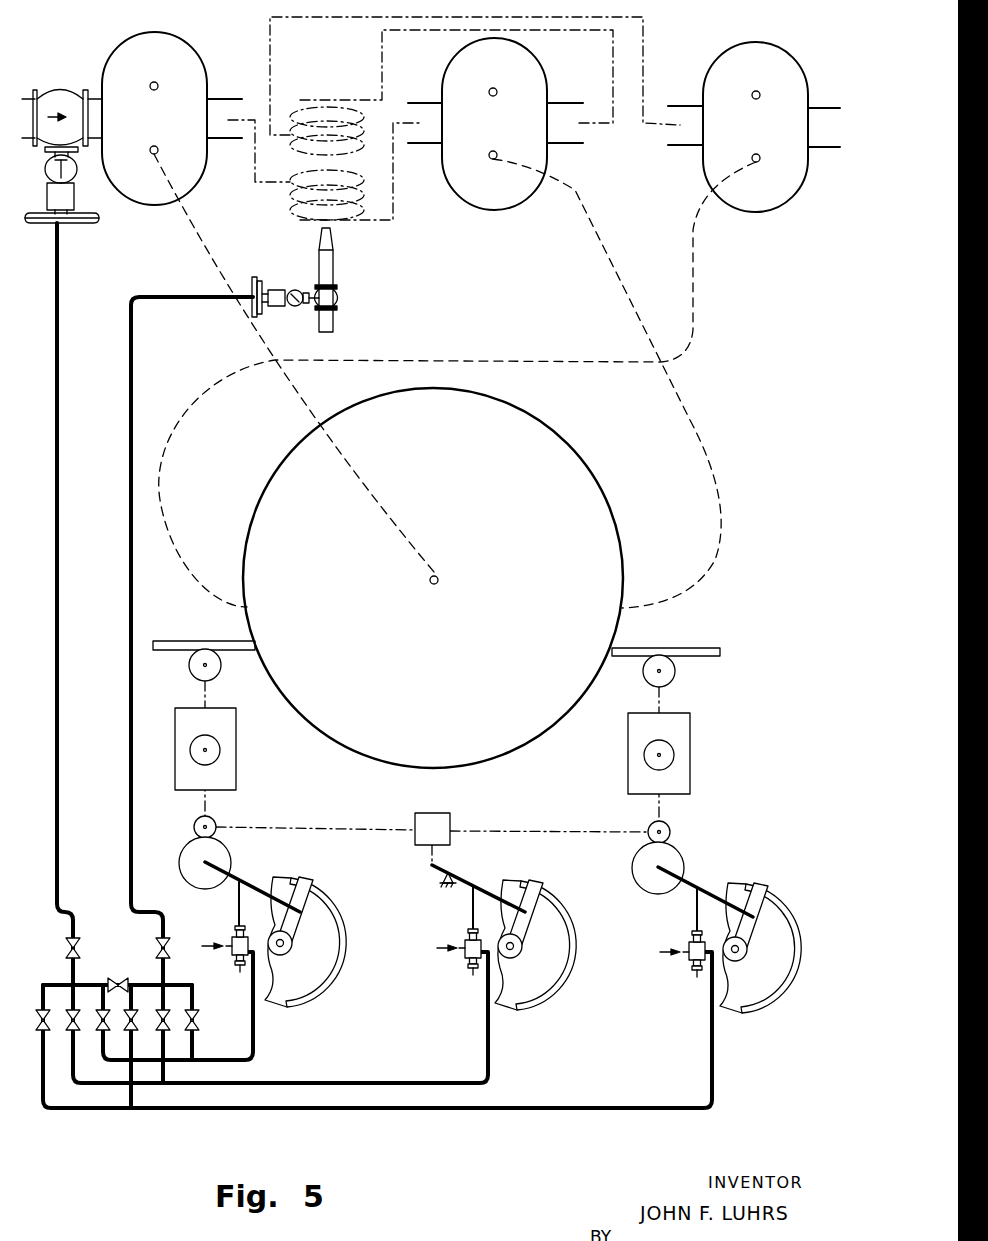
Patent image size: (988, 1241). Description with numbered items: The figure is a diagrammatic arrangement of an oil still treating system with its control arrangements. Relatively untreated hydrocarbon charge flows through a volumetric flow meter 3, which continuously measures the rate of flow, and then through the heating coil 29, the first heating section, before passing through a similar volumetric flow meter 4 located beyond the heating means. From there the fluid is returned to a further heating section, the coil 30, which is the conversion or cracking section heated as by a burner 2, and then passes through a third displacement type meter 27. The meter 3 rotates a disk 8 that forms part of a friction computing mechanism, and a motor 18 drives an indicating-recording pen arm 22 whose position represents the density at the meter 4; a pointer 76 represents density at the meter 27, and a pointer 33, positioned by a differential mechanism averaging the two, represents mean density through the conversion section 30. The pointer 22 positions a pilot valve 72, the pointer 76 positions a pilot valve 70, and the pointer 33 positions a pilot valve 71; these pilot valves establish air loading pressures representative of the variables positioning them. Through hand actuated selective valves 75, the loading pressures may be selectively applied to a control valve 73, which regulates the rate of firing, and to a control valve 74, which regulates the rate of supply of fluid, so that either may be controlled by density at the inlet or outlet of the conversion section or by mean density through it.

The burner 2 is at (333, 253).
The volumetric flow meter 3 is at (203, 172).
The volumetric flow meter 4 is at (543, 172).
The disk 8 is at (588, 456).
The motor 18 is at (690, 750).
The indicating-recording pen arm 22 is at (713, 892).
The third displacement type meter 27 is at (803, 180).
The heating coil 29 is at (302, 178).
The coil 30 is at (291, 116).
The pointer 33 is at (491, 890).
The pilot valve 70 is at (232, 929).
The pilot valve 71 is at (463, 934).
The pilot valve 72 is at (688, 936).
The control valve 73 is at (260, 278).
The control valve 74 is at (97, 225).
The hand actuated selective valves 75 is at (135, 1005).
The pointer 76 is at (258, 886).